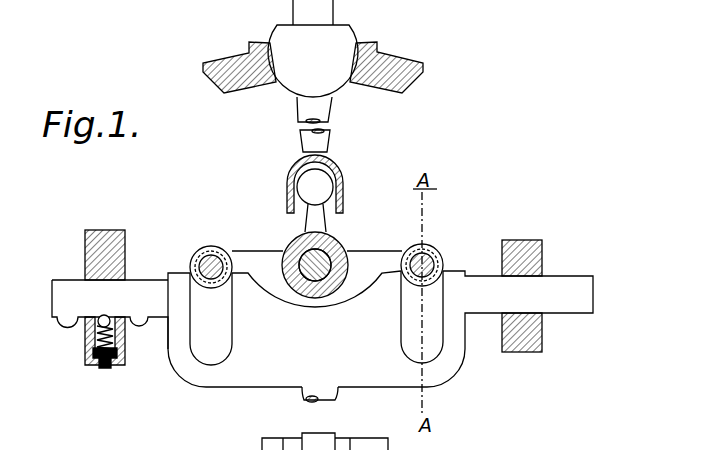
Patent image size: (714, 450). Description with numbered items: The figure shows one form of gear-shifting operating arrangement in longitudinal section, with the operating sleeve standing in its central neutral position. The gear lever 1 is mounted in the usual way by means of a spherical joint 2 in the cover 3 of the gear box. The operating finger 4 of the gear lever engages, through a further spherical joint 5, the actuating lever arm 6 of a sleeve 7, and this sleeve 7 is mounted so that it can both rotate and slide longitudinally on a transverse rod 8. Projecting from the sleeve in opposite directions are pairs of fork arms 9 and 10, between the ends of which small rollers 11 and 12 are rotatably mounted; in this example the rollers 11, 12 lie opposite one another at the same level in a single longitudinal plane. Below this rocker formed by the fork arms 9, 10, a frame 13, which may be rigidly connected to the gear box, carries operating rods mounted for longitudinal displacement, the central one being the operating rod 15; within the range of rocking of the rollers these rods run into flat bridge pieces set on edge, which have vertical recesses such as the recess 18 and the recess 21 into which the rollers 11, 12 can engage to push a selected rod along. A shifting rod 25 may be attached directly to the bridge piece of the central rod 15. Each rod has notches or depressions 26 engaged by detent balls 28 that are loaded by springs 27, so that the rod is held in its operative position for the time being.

The gear lever 1 is at (305, 14).
The spherical joint 2 is at (303, 78).
The cover 3 is at (413, 67).
The operating finger 4 is at (328, 137).
The further spherical joint 5 is at (306, 183).
The actuating lever arm 6 is at (318, 223).
The sleeve 7 is at (330, 246).
The transverse rod 8 is at (312, 272).
The fork arms 9 is at (246, 256).
The fork arms 10 is at (390, 252).
The roller 11 is at (203, 253).
The roller 12 is at (433, 253).
The frame 13 is at (88, 362).
The operating rod 15 is at (55, 300).
The recess 18 is at (203, 353).
The recess 21 is at (418, 365).
The shifting rod 25 is at (336, 402).
The notches 26 is at (147, 320).
The springs 27 is at (95, 338).
The detent balls 28 is at (106, 318).